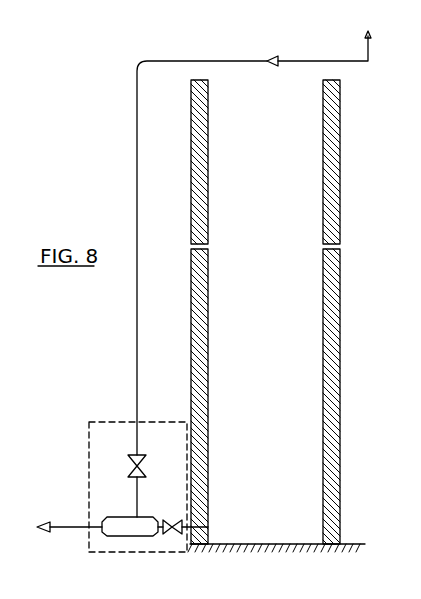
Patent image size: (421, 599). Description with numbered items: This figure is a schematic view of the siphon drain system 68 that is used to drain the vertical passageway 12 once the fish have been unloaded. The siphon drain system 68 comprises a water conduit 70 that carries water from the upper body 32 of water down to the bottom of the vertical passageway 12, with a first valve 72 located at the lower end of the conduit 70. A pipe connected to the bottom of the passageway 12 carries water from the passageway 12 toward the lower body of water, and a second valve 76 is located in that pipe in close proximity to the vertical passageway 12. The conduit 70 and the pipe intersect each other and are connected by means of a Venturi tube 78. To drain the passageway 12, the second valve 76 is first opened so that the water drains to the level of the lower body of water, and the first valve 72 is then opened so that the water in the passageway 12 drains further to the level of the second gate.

The vertical passageway 12 is at (309, 119).
The upper body of water 32 is at (338, 42).
The water conduit 70 is at (136, 159).
The siphon drain system 68 is at (89, 447).
The first valve 72 is at (144, 468).
The second valve 76 is at (176, 522).
The Venturi tube 78 is at (126, 526).